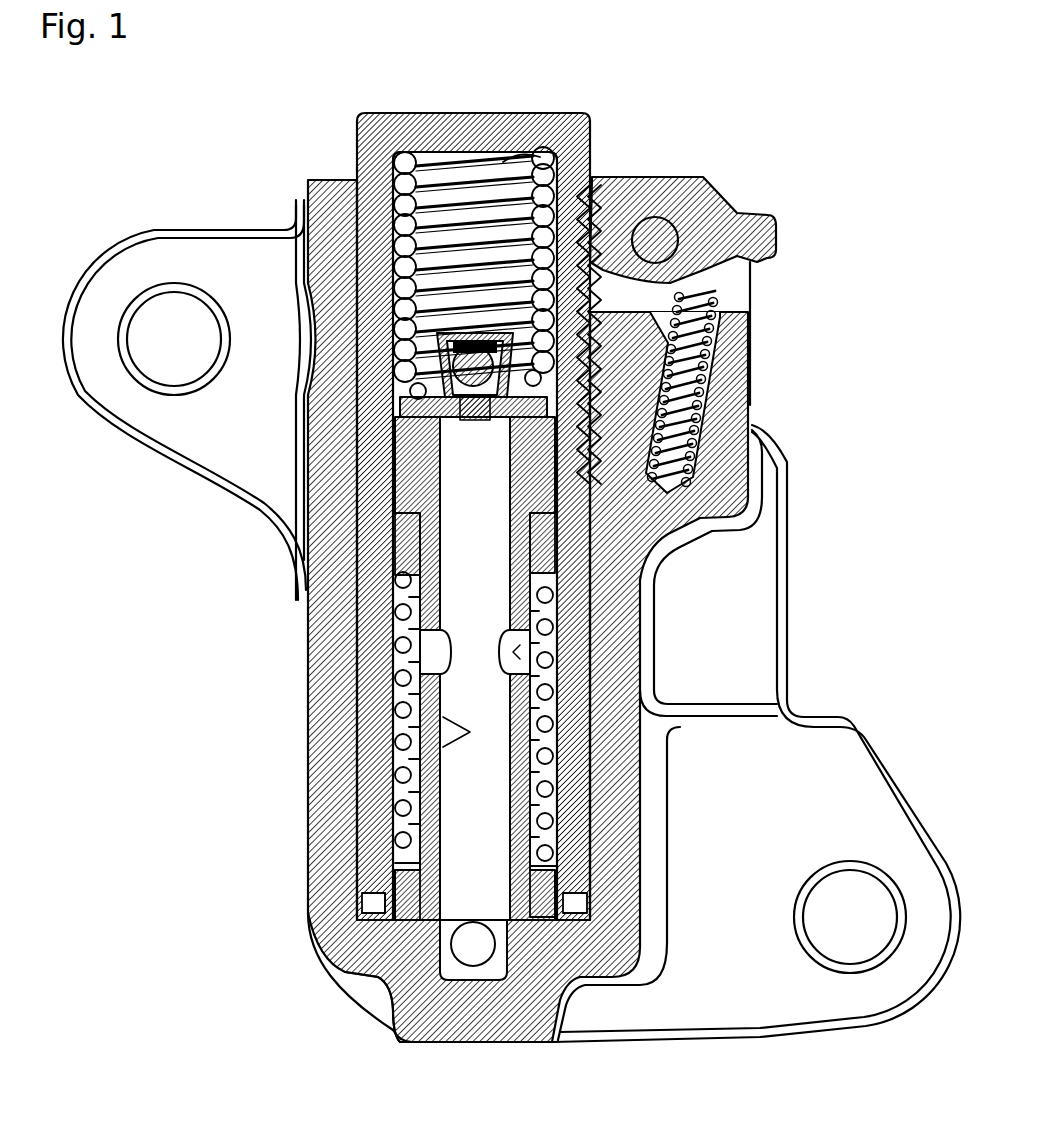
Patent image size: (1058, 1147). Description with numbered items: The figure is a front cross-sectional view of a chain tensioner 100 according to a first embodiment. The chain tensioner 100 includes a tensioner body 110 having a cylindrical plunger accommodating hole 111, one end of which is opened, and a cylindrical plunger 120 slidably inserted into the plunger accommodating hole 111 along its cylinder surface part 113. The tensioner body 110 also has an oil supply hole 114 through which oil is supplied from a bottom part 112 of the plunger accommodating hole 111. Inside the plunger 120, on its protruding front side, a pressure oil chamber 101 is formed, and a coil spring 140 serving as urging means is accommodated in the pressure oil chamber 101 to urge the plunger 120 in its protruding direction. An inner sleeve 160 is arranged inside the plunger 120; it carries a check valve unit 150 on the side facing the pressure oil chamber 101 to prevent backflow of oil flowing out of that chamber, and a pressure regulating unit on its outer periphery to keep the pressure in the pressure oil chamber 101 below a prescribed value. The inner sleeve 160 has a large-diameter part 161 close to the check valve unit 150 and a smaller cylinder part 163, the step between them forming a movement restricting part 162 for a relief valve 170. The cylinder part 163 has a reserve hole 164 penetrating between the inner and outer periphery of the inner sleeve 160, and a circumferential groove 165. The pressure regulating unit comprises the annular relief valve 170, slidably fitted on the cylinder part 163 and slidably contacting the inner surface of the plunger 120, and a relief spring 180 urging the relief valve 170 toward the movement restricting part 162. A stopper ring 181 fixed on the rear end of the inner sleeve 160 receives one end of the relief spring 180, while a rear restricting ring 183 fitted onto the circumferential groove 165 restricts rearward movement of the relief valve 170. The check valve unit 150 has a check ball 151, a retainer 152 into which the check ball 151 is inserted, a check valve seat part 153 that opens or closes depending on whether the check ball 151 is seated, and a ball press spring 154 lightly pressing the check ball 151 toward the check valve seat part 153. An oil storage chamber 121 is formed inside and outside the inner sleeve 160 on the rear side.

The chain tensioner 100 is at (511, 567).
The pressure oil chamber 101 is at (700, 292).
The tensioner body 110 is at (306, 200).
The plunger accommodating hole 111 is at (279, 838).
The bottom part 112 is at (387, 893).
The cylinder surface part 113 is at (377, 775).
The oil supply hole 114 is at (452, 950).
The plunger 120 is at (404, 483).
The oil storage chamber 121 is at (440, 732).
The coil spring 140 is at (400, 160).
The check valve unit 150 is at (669, 317).
The check ball 151 is at (545, 348).
The retainer 152 is at (515, 342).
The check valve seat part 153 is at (690, 432).
The ball press spring 154 is at (495, 365).
The inner sleeve 160 is at (511, 621).
The large-diameter part 161 is at (660, 485).
The movement restricting part 162 is at (654, 545).
The cylinder part 163 is at (656, 567).
The reserve hole 164 is at (656, 650).
The circumferential groove 165 is at (656, 590).
The relief valve 170 is at (409, 749).
The relief spring 180 is at (400, 670).
The stopper ring 181 is at (545, 895).
The rear restricting ring 183 is at (395, 600).